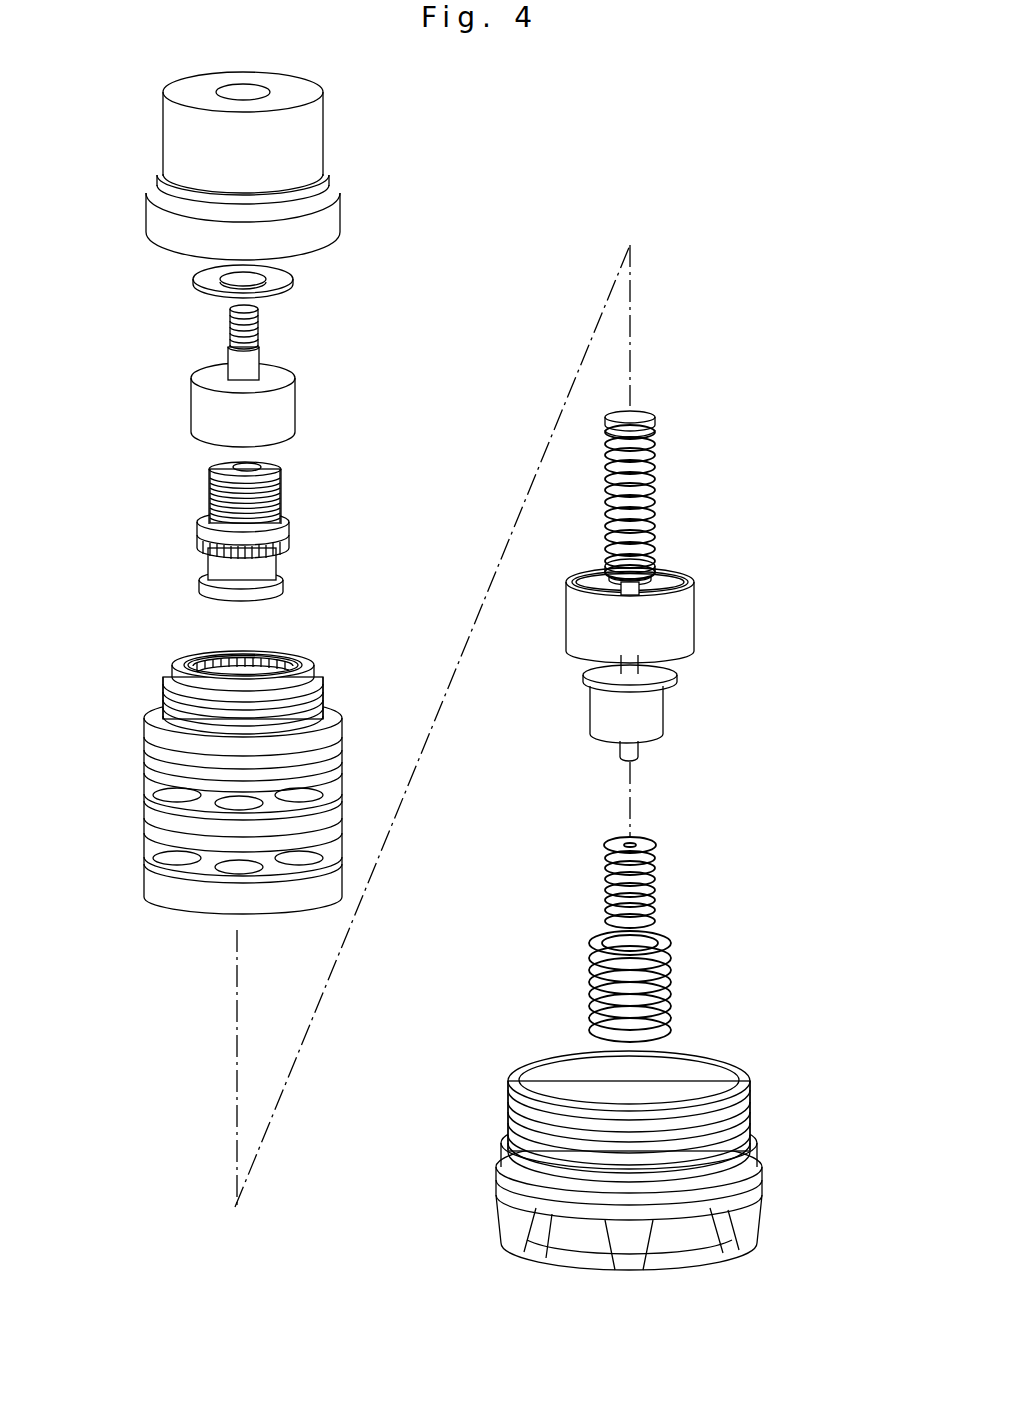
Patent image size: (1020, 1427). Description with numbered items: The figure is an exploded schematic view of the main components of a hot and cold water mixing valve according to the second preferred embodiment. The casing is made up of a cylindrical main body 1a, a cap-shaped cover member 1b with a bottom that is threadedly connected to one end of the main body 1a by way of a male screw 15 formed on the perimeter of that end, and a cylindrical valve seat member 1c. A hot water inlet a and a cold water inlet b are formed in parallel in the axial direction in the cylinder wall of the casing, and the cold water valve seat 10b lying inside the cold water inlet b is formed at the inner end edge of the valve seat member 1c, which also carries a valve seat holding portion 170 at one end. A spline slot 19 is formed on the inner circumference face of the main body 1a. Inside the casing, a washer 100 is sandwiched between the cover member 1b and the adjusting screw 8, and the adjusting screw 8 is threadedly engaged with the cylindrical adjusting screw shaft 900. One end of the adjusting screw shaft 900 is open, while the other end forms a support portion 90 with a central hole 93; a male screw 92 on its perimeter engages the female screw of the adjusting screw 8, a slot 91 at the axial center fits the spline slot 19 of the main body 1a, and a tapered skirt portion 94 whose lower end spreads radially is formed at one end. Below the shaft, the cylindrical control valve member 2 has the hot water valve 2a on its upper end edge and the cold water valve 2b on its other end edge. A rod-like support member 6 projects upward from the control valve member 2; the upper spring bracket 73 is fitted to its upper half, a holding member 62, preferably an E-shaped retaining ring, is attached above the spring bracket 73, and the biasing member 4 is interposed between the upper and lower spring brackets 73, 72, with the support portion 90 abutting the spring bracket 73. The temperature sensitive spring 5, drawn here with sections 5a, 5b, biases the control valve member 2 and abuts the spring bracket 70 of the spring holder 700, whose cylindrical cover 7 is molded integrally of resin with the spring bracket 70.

The cover member 1b is at (330, 178).
The washer 100 is at (293, 282).
The adjusting screw 8 is at (258, 330).
The adjusting screw shaft 900 is at (110, 432).
The hole 93 is at (238, 466).
The support portion 90 is at (212, 471).
The male screw 92 is at (212, 505).
The slot 91 is at (197, 540).
The tapered skirt portion 94 is at (199, 586).
The main body 1a is at (255, 773).
The spline slot 19 is at (232, 670).
The male screw 15 is at (170, 704).
The hot water inlet a is at (320, 796).
The cold water inlet b is at (312, 856).
The holding member 62 is at (637, 414).
The biasing member 4 is at (659, 424).
The upper spring bracket 73 is at (606, 428).
The spring bracket 72 is at (682, 581).
The control valve member 2 is at (627, 621).
The hot water valve 2a is at (576, 586).
The cold water valve 2b is at (518, 580).
The spring holder 700 is at (768, 672).
The spring bracket 70 is at (678, 679).
The cylindrical cover 7 is at (665, 713).
The support member 6 is at (640, 752).
The temperature sensitive spring 5 is at (514, 878).
The small spring 5b is at (603, 886).
The large spring 5a is at (590, 981).
The valve seat member 1c is at (690, 1135).
The cold water valve seat 10b is at (745, 1078).
The valve seat holding portion 170 is at (760, 1229).